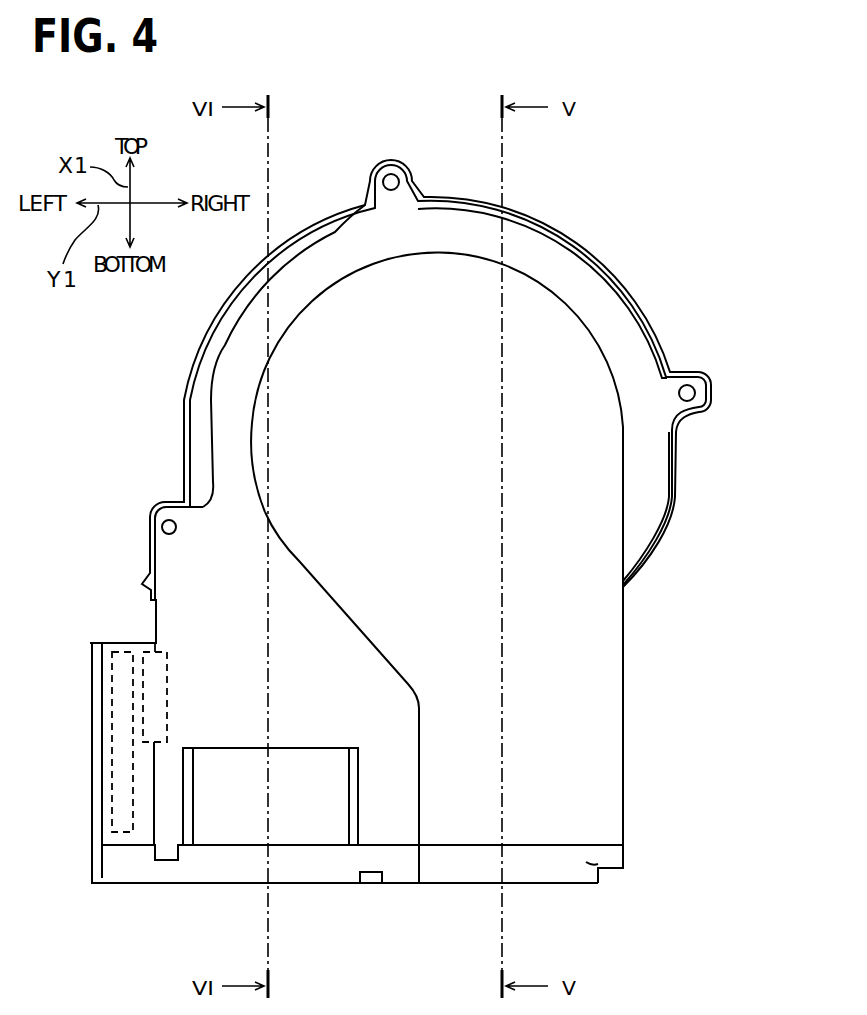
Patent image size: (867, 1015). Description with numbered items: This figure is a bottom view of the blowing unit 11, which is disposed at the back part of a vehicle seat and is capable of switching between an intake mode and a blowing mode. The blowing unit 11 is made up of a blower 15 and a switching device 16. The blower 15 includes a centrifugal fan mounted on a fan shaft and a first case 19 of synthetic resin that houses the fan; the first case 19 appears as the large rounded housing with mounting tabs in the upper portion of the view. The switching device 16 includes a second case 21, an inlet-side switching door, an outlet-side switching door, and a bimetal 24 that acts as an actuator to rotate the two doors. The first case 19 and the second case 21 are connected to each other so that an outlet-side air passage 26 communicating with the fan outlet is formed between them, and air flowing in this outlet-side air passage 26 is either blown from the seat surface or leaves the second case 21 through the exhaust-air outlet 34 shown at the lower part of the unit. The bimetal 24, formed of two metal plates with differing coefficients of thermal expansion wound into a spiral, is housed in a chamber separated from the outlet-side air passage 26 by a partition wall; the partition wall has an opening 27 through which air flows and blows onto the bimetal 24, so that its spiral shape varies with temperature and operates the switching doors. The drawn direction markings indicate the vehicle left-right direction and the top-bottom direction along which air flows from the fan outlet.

The blowing unit 11 is at (586, 214).
The blower 15 is at (676, 470).
The first case 19 is at (668, 502).
The switching device 16 is at (626, 728).
The second case 21 is at (623, 790).
The bimetal 24 is at (116, 642).
The outlet-side air passage 26 is at (230, 703).
The opening 27 is at (166, 695).
The exhaust-air outlet 34 is at (352, 795).